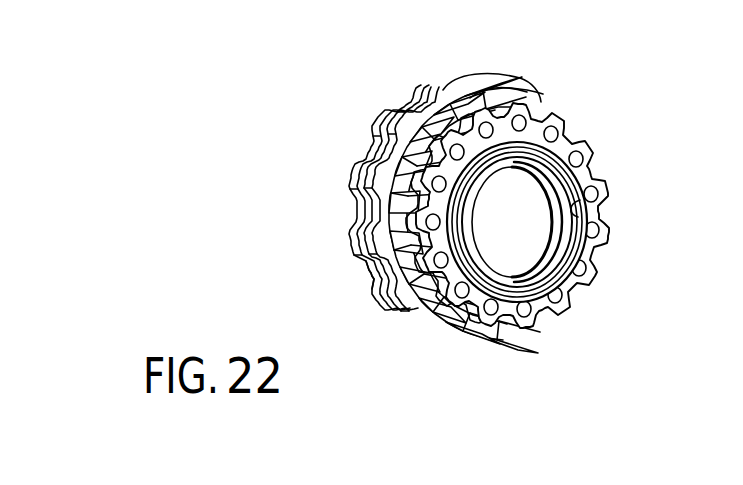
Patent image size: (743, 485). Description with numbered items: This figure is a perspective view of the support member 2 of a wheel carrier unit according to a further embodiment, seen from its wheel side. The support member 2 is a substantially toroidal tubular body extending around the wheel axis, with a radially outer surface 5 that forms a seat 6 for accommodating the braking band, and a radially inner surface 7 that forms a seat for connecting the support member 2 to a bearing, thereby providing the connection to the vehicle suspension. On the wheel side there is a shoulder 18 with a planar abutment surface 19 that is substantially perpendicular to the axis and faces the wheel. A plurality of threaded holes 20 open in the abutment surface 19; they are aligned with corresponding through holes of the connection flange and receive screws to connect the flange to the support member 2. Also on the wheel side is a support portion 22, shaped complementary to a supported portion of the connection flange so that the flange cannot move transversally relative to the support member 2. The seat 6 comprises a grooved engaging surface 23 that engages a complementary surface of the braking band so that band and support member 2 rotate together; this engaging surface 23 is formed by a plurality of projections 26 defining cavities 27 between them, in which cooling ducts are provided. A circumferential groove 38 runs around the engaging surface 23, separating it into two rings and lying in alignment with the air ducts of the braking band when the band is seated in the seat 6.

The support member 2 is at (320, 188).
The radially outer surface 5 is at (575, 126).
The seat 6 is at (523, 88).
The radially inner surface 7 is at (595, 228).
The shoulder 18 is at (477, 305).
The abutment surface 19 is at (510, 312).
The threaded holes 20 is at (603, 187).
The support portion 22 is at (603, 213).
The engaging surface 23 is at (378, 275).
The projections 26 is at (418, 88).
The cavities 27 is at (372, 150).
The circumferential groove 38 is at (450, 78).